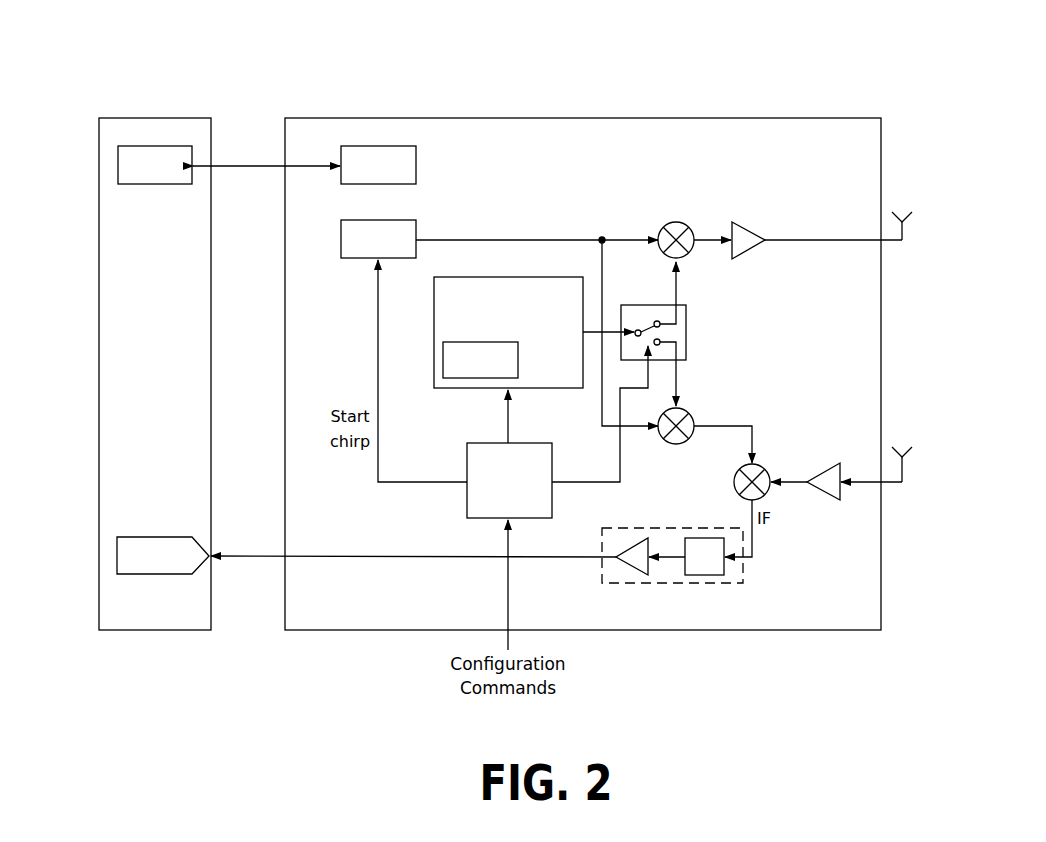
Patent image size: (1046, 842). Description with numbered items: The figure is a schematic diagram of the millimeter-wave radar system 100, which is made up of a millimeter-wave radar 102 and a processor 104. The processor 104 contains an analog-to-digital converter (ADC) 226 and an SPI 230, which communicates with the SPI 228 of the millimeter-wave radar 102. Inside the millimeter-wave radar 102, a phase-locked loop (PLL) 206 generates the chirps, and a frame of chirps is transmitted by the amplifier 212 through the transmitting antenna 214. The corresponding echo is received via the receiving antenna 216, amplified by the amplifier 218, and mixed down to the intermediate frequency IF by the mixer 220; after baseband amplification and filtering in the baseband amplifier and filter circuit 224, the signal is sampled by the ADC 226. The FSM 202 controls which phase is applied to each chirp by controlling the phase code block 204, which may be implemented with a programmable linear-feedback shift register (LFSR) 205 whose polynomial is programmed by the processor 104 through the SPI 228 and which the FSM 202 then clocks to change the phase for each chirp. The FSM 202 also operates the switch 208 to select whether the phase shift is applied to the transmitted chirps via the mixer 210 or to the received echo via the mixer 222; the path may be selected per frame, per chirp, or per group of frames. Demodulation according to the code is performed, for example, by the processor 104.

The millimeter-wave radar system 100 is at (137, 58).
The millimeter-wave radar 102 is at (539, 118).
The processor 104 is at (117, 118).
The FSM 202 is at (488, 442).
The phase code block 204 is at (520, 277).
The programmable linear-feedback shift register (LFSR) 205 is at (518, 358).
The phase-locked loop (PLL) 206 is at (368, 220).
The switch 208 is at (686, 333).
The mixer 210 is at (672, 223).
The amplifier 212 is at (745, 222).
The transmitting antenna 214 is at (908, 214).
The receiving antenna 216 is at (908, 449).
The amplifier 218 is at (838, 463).
The mixer 220 is at (767, 467).
The mixer 222 is at (688, 412).
The baseband amplifier and filter circuit 224 is at (635, 528).
The analog-to-digital converter (ADC) 226 is at (135, 537).
The SPI 228 is at (368, 146).
The SPI 230 is at (142, 146).